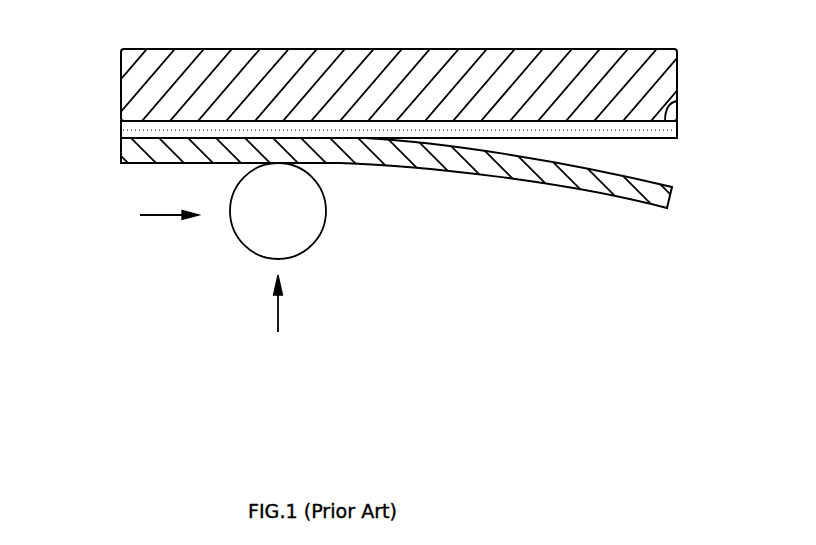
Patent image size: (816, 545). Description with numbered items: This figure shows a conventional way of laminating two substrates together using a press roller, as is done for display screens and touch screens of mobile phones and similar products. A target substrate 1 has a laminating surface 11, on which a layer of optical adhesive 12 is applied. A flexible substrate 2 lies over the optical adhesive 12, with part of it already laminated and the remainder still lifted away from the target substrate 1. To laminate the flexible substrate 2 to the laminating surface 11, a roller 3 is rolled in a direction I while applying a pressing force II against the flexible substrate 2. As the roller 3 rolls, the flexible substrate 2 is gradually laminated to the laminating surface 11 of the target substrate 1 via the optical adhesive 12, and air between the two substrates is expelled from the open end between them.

The target substrate 1 is at (122, 88).
The laminating surface 11 is at (677, 99).
The optical adhesive 12 is at (122, 130).
The flexible substrate 2 is at (122, 150).
The roller 3 is at (307, 213).
The direction I is at (155, 216).
The pressing force II is at (279, 312).